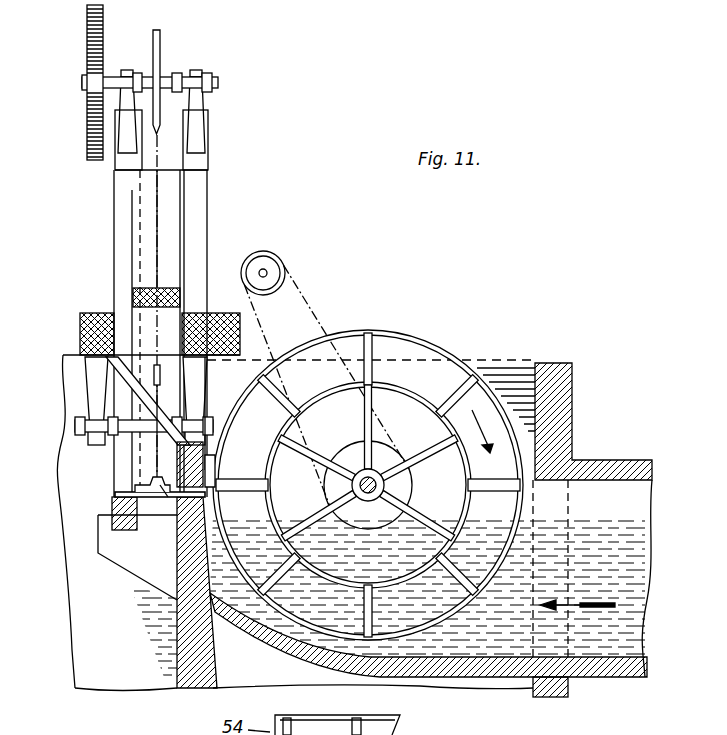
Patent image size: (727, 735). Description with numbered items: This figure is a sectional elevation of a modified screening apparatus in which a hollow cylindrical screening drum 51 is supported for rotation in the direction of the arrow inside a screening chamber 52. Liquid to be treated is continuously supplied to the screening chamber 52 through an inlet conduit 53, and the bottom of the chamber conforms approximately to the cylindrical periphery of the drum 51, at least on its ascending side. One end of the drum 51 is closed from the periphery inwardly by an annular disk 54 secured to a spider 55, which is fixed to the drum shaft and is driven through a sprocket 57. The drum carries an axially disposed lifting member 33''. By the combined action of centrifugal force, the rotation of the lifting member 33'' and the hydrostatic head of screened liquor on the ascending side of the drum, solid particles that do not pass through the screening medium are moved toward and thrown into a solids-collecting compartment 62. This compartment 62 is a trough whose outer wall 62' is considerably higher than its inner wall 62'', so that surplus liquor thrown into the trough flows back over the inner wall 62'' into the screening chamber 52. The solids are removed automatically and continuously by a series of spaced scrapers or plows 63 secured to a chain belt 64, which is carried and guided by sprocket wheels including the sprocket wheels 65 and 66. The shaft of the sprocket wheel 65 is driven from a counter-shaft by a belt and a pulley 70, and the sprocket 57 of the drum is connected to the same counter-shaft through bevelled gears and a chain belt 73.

The hollow cylindrical screening drum 51 is at (412, 330).
The screening chamber 52 is at (480, 677).
The inlet conduit 53 is at (605, 490).
The annular disk 54 is at (480, 400).
The spider 55 is at (372, 428).
The sprocket 57 is at (347, 443).
The solids-collecting compartment 62 is at (108, 475).
The outer wall 62' is at (120, 488).
The inner wall 62'' is at (240, 444).
The scrapers or plows 63 is at (168, 500).
The chain belt 64 is at (155, 226).
The sprocket wheel 65 is at (160, 48).
The sprocket wheel 66 is at (160, 390).
The pulley 70 is at (87, 40).
The chain belt 73 is at (305, 308).
The lifting member 33'' is at (366, 461).